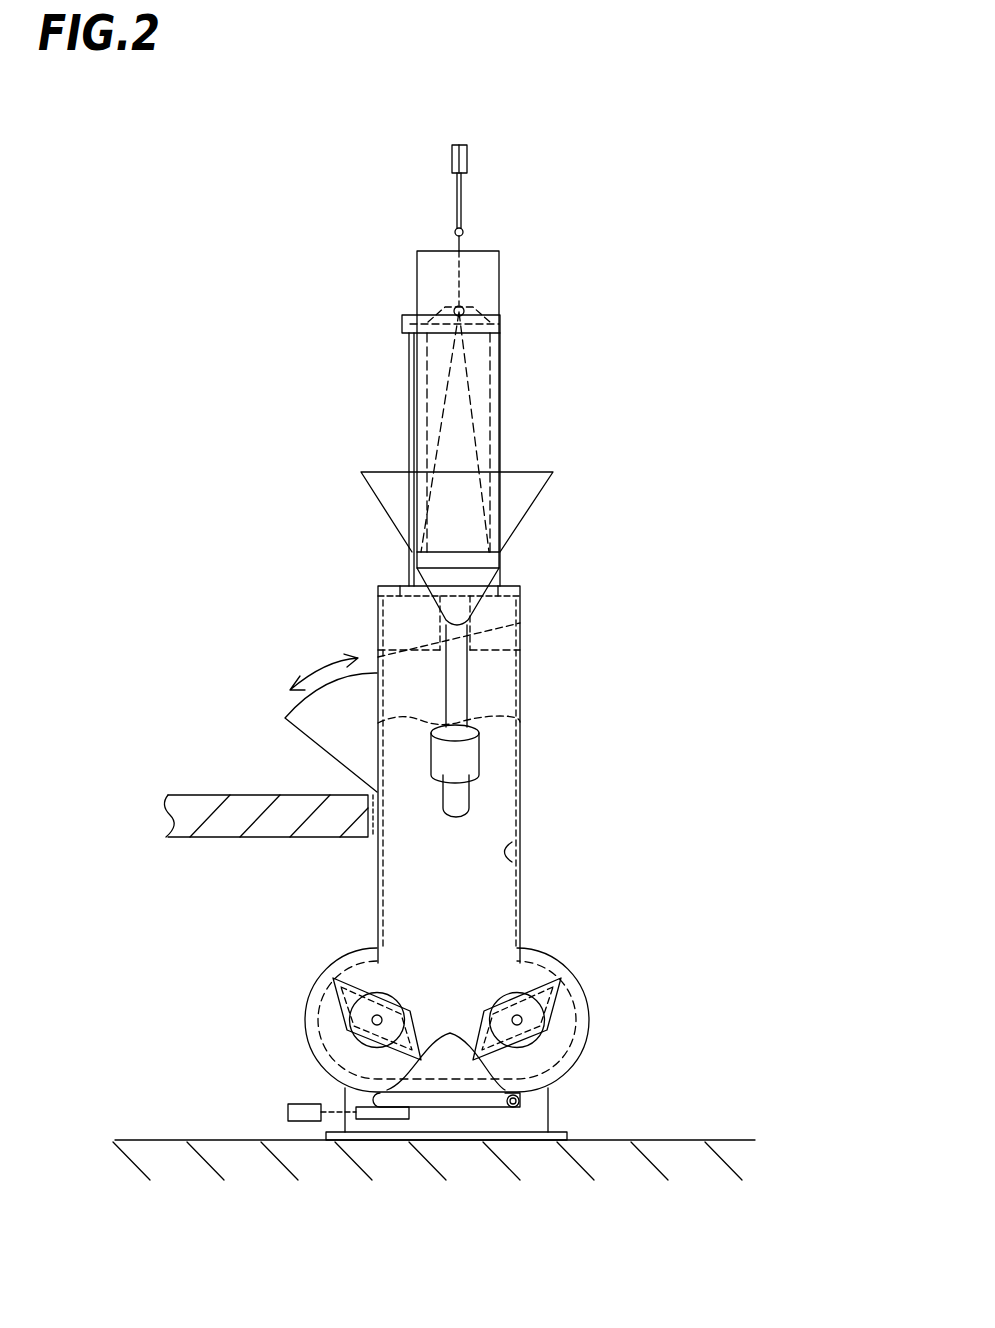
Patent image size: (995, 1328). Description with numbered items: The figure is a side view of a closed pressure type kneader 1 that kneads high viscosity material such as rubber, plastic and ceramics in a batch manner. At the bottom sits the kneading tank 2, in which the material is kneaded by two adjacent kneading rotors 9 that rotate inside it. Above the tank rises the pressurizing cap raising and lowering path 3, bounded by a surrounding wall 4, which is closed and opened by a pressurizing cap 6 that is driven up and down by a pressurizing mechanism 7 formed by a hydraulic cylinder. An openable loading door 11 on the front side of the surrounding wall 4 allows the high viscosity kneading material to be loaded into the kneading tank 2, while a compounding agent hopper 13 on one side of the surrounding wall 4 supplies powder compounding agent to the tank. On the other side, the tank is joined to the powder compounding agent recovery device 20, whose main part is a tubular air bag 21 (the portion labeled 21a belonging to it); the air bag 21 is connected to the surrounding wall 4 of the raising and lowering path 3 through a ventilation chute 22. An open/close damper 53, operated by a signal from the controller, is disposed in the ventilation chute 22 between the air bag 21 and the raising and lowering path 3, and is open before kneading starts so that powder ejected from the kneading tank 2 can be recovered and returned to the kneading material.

The closed pressure type kneader 1 is at (472, 782).
The kneading tank 2 is at (597, 977).
The pressurizing cap raising and lowering path 3 is at (466, 932).
The surrounding wall 4 is at (520, 830).
The pressurizing cap 6 is at (525, 700).
The pressurizing mechanism 7 is at (410, 362).
The kneading rotors 9 is at (350, 1033).
The loading door 11 is at (377, 700).
The compounding agent hopper 13 is at (378, 500).
The powder compounding agent recovery device 20 is at (498, 359).
The air bag 21 is at (545, 447).
The flange 21a is at (500, 360).
The ventilation chute 22 is at (500, 680).
The open/close damper 53 is at (500, 768).